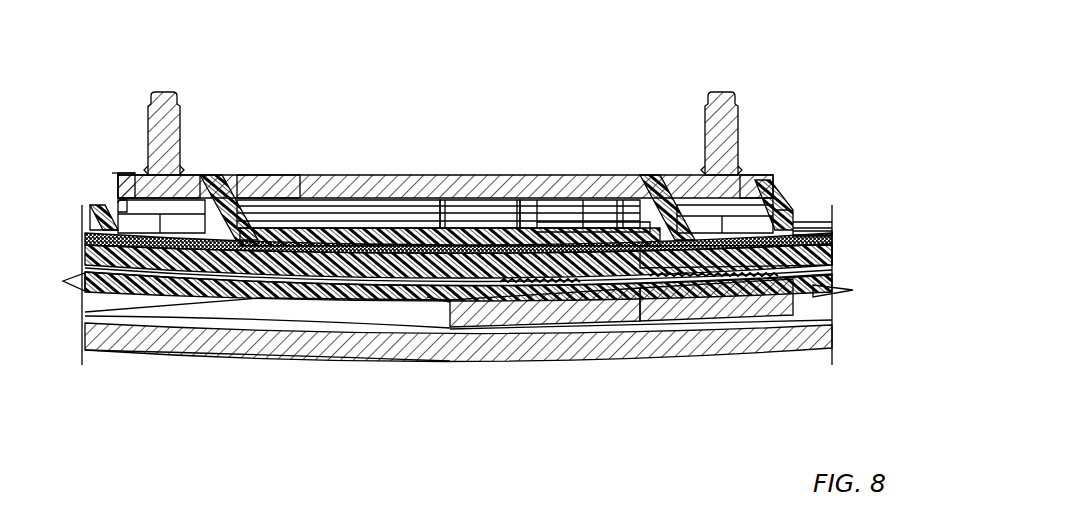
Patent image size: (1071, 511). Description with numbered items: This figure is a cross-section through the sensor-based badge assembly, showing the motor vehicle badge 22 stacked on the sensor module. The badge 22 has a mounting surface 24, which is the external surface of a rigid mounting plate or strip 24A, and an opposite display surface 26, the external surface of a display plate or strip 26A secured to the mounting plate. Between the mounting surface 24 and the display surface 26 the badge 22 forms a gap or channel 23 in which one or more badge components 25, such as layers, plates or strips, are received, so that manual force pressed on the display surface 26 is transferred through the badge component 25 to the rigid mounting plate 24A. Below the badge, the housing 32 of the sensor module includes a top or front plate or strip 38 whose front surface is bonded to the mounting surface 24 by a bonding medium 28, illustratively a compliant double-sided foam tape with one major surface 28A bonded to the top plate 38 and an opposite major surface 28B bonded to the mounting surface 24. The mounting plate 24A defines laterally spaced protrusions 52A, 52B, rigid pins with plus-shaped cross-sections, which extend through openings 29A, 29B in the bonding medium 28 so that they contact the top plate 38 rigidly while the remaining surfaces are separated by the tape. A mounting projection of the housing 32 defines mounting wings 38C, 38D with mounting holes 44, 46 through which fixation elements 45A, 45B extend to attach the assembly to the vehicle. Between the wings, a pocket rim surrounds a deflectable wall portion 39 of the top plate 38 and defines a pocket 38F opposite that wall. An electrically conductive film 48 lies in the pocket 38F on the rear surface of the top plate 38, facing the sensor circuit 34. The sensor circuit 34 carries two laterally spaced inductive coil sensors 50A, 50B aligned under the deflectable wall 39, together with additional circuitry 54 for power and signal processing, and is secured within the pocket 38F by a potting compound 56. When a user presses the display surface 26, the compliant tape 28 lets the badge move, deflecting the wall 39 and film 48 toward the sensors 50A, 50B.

The motor vehicle badge 22 is at (783, 358).
The gap or channel 23 is at (438, 318).
The mounting surface 24 is at (697, 186).
The mounting plate or strip 24A is at (200, 345).
The badge component 25 is at (670, 300).
The display surface 26 is at (585, 358).
The display plate or strip 26A is at (153, 350).
The bonding medium 28 is at (832, 237).
The major surface of bonding medium 28A is at (815, 233).
The opposite major surface of bonding medium 28B is at (832, 263).
The opening in bonding medium 29A is at (309, 275).
The opening in bonding medium 29B is at (603, 282).
The housing 32 is at (118, 164).
The sensor circuit 34 is at (507, 166).
The top or front plate or strip 38 is at (108, 204).
The mounting wing 38C is at (765, 175).
The mounting wing 38D is at (195, 176).
The pocket 38F is at (232, 190).
The deflectable wall portion 39 is at (426, 238).
The mounting hole 44 is at (757, 210).
The fixation element 45A is at (735, 108).
The fixation element 45B is at (151, 108).
The mounting hole 46 is at (117, 178).
The electrically conductive film 48 is at (382, 245).
The inductive coil sensor 50A is at (298, 200).
The inductive coil sensor 50B is at (576, 212).
The protrusion 52A is at (328, 240).
The protrusion 52B is at (598, 235).
The additional circuitry 54 is at (266, 192).
The potting compound 56 is at (441, 236).